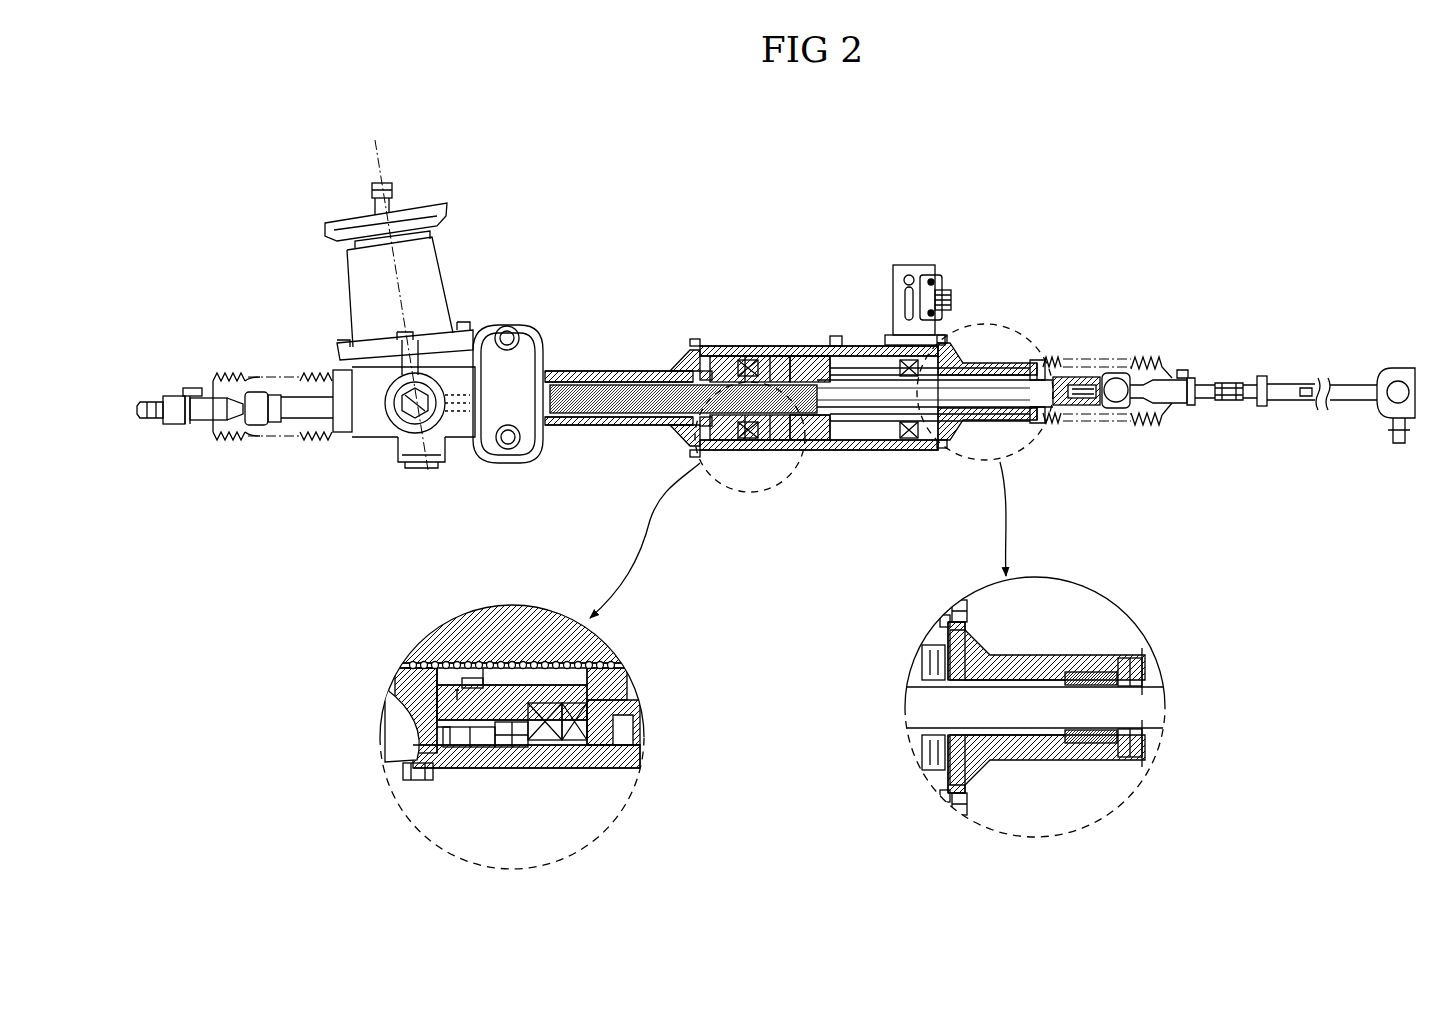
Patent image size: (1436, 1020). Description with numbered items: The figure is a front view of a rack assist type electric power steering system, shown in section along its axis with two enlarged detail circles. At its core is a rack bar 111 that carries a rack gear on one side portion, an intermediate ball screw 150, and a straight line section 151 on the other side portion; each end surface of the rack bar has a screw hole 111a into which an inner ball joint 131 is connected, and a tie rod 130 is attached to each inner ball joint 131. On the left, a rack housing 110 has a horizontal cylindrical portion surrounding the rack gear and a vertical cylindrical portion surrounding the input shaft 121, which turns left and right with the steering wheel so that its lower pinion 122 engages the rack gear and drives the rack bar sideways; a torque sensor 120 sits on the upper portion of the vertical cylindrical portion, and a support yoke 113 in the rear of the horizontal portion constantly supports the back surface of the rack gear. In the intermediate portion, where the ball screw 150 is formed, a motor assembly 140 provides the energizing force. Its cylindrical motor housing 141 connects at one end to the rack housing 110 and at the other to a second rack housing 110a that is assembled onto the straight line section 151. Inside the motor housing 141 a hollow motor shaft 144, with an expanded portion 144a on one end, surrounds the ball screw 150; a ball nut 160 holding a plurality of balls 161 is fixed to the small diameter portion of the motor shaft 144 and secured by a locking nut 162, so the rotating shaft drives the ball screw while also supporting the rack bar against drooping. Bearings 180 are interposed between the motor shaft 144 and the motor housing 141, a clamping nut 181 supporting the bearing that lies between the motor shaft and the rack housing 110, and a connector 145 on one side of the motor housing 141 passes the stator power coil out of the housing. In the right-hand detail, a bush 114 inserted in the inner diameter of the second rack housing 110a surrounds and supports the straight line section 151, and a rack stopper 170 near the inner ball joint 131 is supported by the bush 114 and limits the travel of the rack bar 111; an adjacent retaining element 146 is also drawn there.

The rack housing 110 is at (610, 368).
The second rack housing 110a is at (1038, 760).
The rack bar 111 is at (296, 405).
The screw hole 111a is at (1097, 383).
The support yoke 113 is at (392, 445).
The bush 114 is at (1077, 672).
The torque sensor 120 is at (428, 263).
The input shaft 121 is at (372, 196).
The pinion 122 is at (449, 462).
The tie rod 130 is at (197, 405).
The inner ball joint 131 is at (1123, 362).
The motor assembly 140 is at (851, 308).
The motor housing 141 is at (768, 352).
The motor shaft 144 is at (626, 683).
The expanded portion 144a is at (714, 352).
The connector 145 is at (928, 268).
The snap ring 146 is at (944, 775).
The ball screw 150 is at (801, 447).
The straight line section 151 is at (1040, 410).
The ball nut 160 is at (573, 773).
The balls 161 is at (523, 662).
The locking nut 162 is at (472, 692).
The rack stopper 170 is at (1143, 655).
The bearings 180 is at (741, 445).
The clamping nut 181 is at (512, 772).